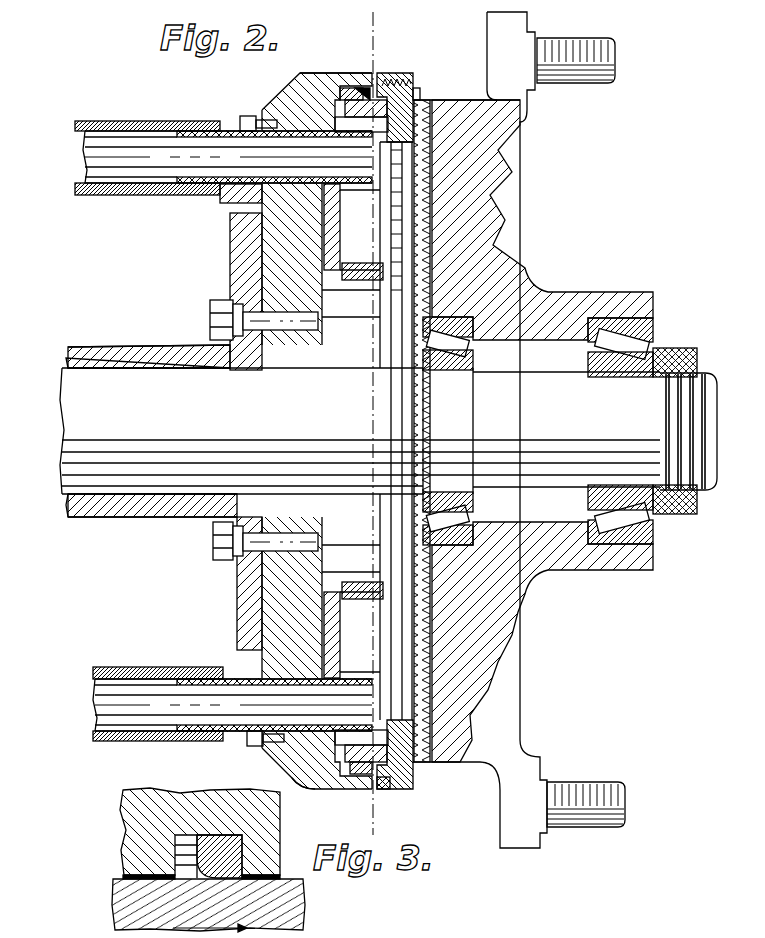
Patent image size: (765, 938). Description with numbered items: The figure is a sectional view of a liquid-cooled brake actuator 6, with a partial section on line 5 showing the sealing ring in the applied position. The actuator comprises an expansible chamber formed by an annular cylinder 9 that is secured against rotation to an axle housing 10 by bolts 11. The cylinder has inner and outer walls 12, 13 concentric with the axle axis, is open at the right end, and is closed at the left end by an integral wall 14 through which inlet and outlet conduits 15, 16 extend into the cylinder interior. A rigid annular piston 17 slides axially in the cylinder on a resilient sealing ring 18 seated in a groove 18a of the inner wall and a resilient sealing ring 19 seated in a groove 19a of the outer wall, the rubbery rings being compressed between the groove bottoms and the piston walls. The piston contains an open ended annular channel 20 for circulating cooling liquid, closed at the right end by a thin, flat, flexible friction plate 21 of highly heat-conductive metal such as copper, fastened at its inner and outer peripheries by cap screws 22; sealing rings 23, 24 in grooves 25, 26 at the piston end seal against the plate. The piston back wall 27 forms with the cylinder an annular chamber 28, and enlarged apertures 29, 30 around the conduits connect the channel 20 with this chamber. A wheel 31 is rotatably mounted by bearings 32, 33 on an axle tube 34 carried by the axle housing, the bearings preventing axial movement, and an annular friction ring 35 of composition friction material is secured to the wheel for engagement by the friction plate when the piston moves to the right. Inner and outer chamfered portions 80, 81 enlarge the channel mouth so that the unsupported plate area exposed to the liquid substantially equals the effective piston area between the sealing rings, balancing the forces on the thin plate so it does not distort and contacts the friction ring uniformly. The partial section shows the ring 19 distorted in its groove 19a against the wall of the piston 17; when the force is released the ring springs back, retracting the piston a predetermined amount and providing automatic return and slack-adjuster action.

In FIG. 2, the section line 5- 5 is at (357, 22).
In FIG. 2, the brake actuator 6 is at (312, 72).
In FIG. 2, the annular cylinder 9 is at (281, 95).
In FIG. 3, the annular cylinder 9 is at (270, 865).
In FIG. 2, the axle housing 10 is at (113, 327).
In FIG. 2, the bolts 11 is at (205, 320).
In FIG. 2, the inner wall 12 is at (343, 612).
In FIG. 2, the outer wall 13 is at (303, 789).
In FIG. 2, the wall 14 is at (335, 638).
In FIG. 2, the inlet conduit 15 is at (240, 731).
In FIG. 2, the outlet conduit 16 is at (224, 130).
In FIG. 2, the rigid annular piston 17 is at (383, 73).
In FIG. 3, the rigid annular piston 17 is at (304, 898).
In FIG. 2, the resilient sealing ring 18 is at (380, 268).
In FIG. 2, the groove 18a is at (378, 303).
In FIG. 2, the resilient sealing ring 19 is at (353, 90).
In FIG. 3, the resilient sealing ring 19 is at (232, 847).
In FIG. 2, the groove 19a is at (345, 88).
In FIG. 3, the groove 19a is at (195, 833).
In FIG. 2, the annular channel 20 is at (382, 790).
In FIG. 2, the friction plate 21 is at (405, 80).
In FIG. 2, the cap screws 22 is at (412, 85).
In FIG. 2, the sealing ring 23 is at (410, 306).
In FIG. 2, the sealing ring 24 is at (405, 96).
In FIG. 2, the groove 25 is at (400, 222).
In FIG. 2, the groove 26 is at (361, 430).
In FIG. 2, the back wall 27 is at (262, 207).
In FIG. 2, the annular chamber 28 is at (262, 255).
In FIG. 2, the enlarged aperture 29 is at (343, 676).
In FIG. 2, the enlarged aperture 30 is at (342, 191).
In FIG. 2, the wheel 31 is at (522, 134).
In FIG. 2, the bearing 32 is at (474, 374).
In FIG. 2, the bearing 33 is at (655, 335).
In FIG. 2, the axle tube 34 is at (712, 395).
In FIG. 2, the annular friction ring 35 is at (428, 762).
In FIG. 2, the inner circumferential chamfered portion 80 is at (400, 600).
In FIG. 2, the outer circumferential chamfered portion 81 is at (390, 698).